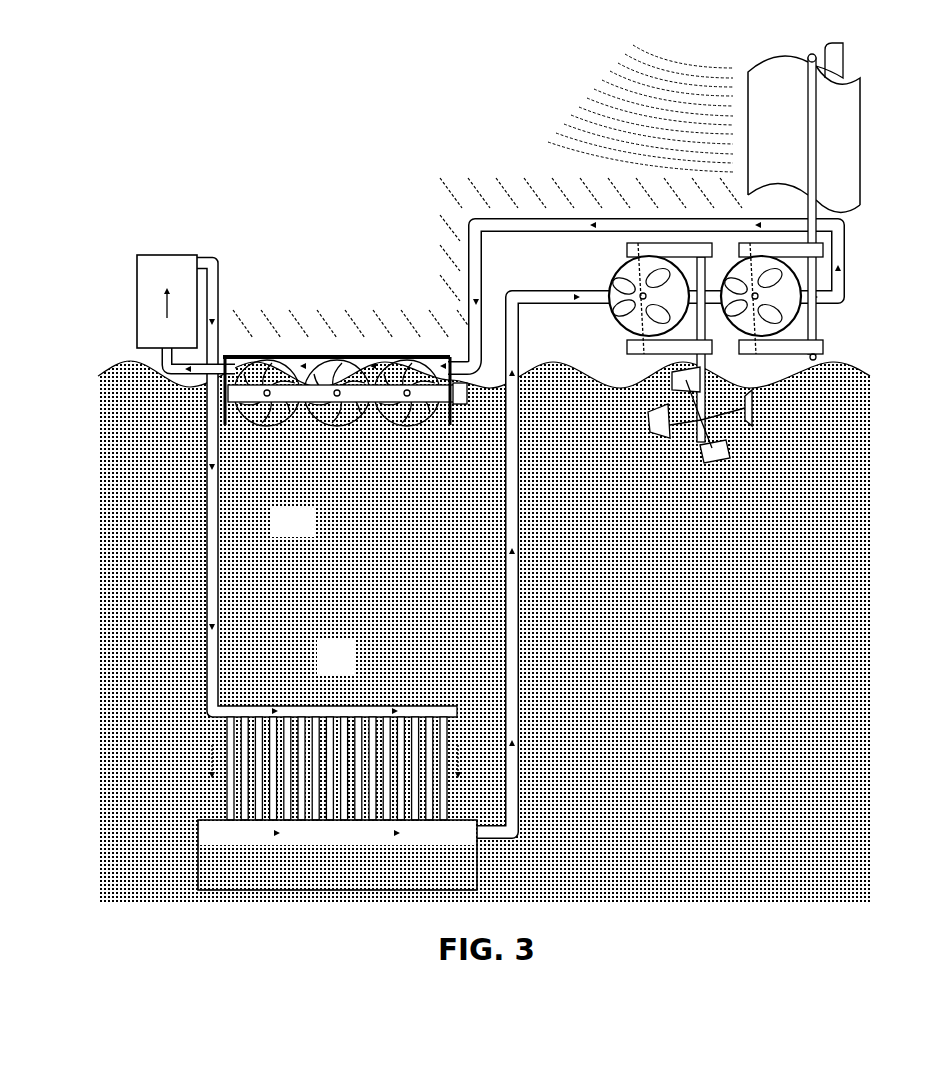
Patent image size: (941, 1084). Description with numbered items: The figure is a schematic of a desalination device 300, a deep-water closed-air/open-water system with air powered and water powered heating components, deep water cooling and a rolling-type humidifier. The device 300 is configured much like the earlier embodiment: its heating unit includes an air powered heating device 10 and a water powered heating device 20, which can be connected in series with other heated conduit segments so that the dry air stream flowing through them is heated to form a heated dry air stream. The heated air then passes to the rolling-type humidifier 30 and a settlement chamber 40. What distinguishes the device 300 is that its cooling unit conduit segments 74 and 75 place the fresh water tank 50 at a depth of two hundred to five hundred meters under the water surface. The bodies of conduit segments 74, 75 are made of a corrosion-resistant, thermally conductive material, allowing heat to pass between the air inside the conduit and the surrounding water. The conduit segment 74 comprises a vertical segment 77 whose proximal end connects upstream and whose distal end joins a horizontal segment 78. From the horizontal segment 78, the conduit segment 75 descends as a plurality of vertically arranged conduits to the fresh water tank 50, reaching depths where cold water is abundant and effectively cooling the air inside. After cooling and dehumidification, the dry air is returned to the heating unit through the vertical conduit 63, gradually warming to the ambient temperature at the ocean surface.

The desalination device 300 is at (487, 473).
The air powered heating device 10 is at (802, 323).
The water powered heating device 20 is at (610, 332).
The humidifier 30 is at (330, 350).
The settlement chamber 40 is at (153, 256).
The fresh water tank 50 is at (212, 840).
The vertical conduit 63 is at (513, 628).
The cooling unit conduit segment 74 is at (223, 513).
The cooling unit conduit segment 75 is at (220, 742).
The vertical segment 77 is at (213, 545).
The horizontal segment 78 is at (367, 712).